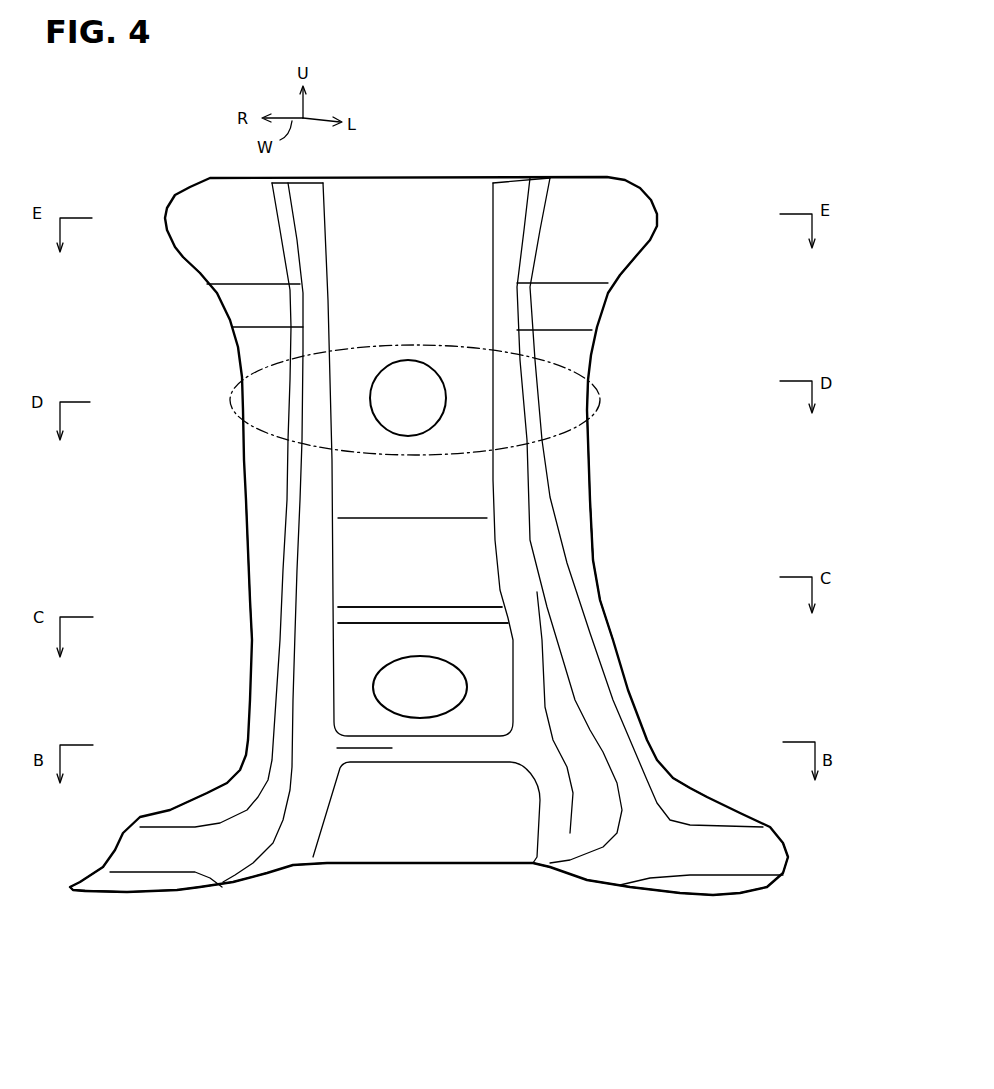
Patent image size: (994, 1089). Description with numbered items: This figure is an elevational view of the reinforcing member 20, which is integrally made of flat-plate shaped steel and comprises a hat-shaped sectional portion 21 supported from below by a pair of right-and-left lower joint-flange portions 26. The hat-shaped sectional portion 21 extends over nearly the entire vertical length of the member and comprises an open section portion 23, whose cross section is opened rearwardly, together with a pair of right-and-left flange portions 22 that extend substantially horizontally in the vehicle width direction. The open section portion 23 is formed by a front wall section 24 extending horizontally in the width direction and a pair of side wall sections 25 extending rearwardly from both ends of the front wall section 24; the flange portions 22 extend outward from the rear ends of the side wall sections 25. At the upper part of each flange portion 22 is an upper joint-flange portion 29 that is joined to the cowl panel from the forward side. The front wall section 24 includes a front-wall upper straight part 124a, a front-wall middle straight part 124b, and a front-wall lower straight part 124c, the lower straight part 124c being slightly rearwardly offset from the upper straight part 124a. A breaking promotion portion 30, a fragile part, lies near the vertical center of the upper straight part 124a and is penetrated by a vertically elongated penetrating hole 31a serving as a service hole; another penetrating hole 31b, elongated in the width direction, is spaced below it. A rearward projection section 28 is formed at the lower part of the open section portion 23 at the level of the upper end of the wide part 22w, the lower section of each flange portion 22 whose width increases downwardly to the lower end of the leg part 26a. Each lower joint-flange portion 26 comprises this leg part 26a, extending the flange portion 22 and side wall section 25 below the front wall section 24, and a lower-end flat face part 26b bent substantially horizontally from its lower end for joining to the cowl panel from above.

The reinforcing member 20 is at (579, 155).
The hat-shaped sectional portion 21 is at (596, 442).
The flange portion 22 is at (258, 550).
The wide part 22w is at (203, 793).
The open section portion 23 is at (557, 495).
The front wall section 24 is at (412, 205).
The side wall section 25 is at (287, 618).
The lower joint-flange portion 26 is at (194, 898).
The leg part 26a is at (267, 873).
The lower-end flat face part 26b is at (133, 893).
The rearward projection section 28 is at (337, 748).
The upper joint-flange portion 29 is at (187, 232).
The breaking promotion portion 30 is at (228, 409).
The penetrating hole 31a is at (421, 409).
The penetrating hole 31b is at (436, 696).
The front-wall upper straight part 124a is at (453, 302).
The front-wall middle straight part 124b is at (475, 558).
The front-wall lower straight part 124c is at (493, 658).